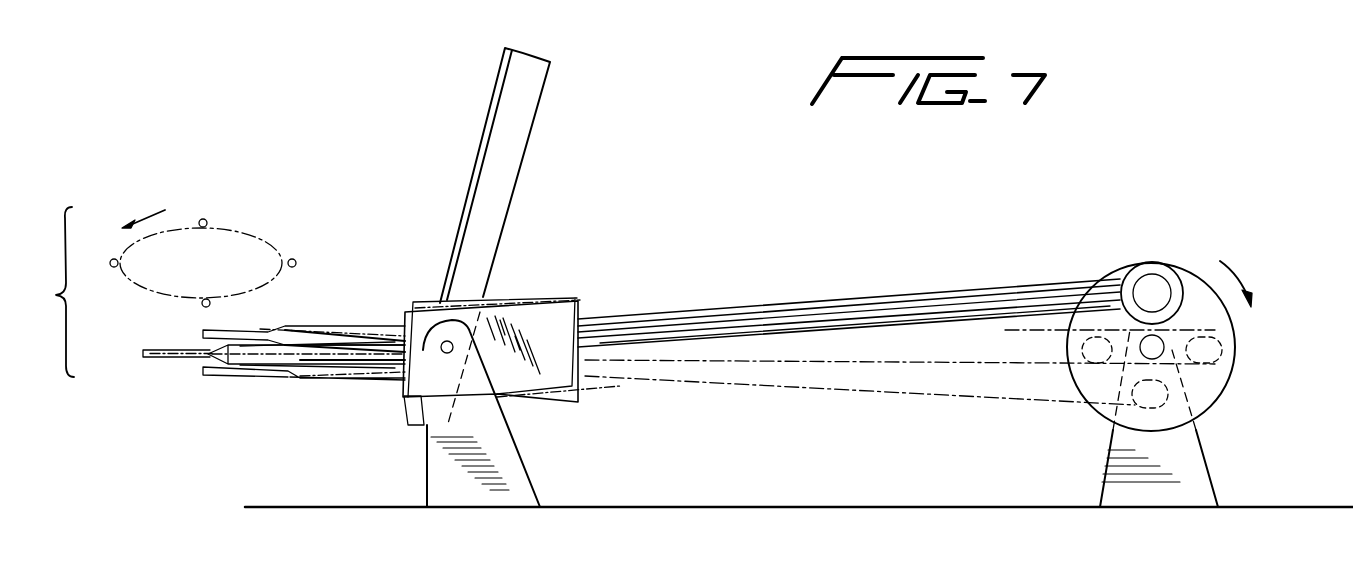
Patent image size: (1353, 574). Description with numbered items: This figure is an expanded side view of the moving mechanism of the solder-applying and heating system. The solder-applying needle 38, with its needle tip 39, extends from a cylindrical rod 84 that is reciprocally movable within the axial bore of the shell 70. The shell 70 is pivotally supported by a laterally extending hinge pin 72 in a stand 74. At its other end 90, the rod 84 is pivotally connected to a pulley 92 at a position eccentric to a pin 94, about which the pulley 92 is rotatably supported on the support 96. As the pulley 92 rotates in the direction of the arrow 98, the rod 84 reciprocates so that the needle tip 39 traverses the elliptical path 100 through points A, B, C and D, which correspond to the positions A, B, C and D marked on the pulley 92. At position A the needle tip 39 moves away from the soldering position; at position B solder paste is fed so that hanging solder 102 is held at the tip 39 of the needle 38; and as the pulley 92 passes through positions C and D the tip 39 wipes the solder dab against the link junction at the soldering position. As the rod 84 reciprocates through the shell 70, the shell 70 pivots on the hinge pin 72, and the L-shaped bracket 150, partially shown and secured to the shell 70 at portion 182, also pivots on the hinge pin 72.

The solder-applying needle 38 is at (226, 377).
The needle tip 39 is at (206, 376).
The shell 70 is at (557, 300).
The hinge pin 72 is at (445, 340).
The stand 74 is at (522, 448).
The rod 84 is at (920, 300).
The other end of the rod 90 is at (1122, 285).
The pulley 92 is at (1237, 346).
The pin 94 is at (1162, 354).
The support 96 is at (1200, 450).
The arrow 98 is at (1242, 268).
The elliptical path 100 is at (240, 229).
The hanging solder 102 is at (140, 358).
The L-shaped bracket 150 is at (512, 158).
The portion 182 is at (404, 417).